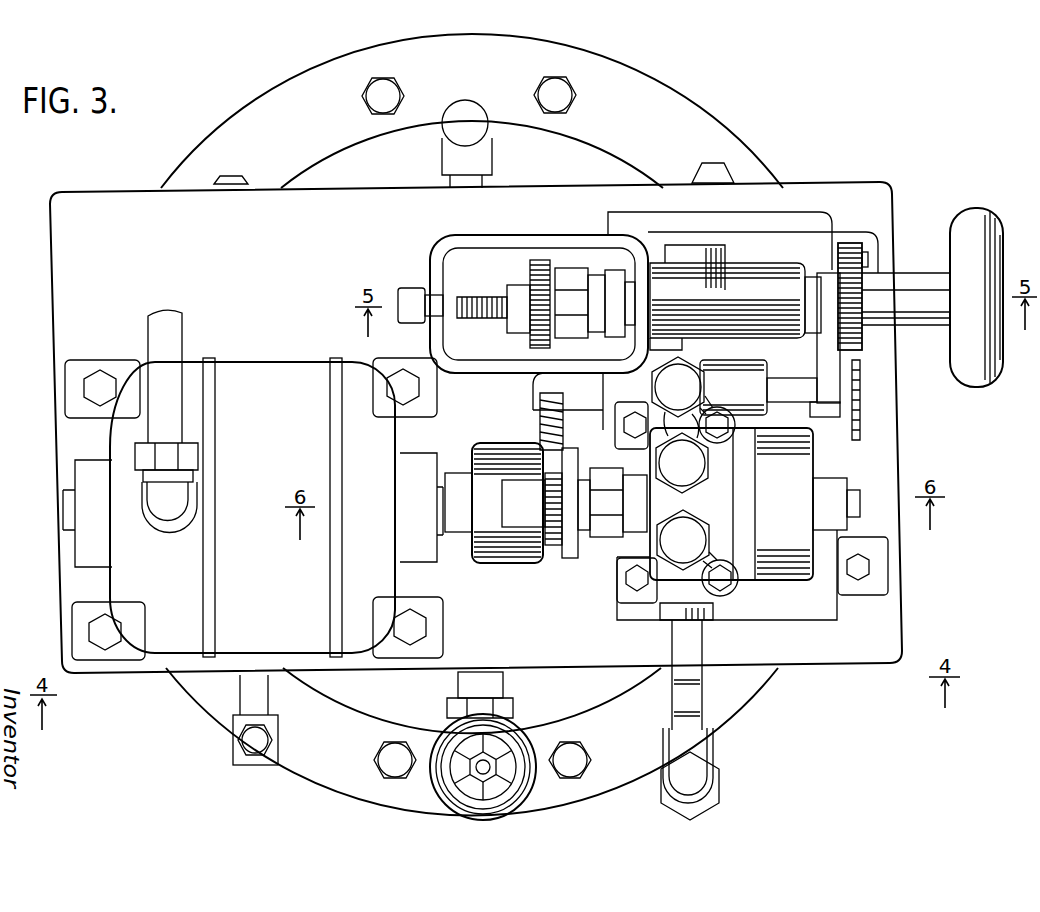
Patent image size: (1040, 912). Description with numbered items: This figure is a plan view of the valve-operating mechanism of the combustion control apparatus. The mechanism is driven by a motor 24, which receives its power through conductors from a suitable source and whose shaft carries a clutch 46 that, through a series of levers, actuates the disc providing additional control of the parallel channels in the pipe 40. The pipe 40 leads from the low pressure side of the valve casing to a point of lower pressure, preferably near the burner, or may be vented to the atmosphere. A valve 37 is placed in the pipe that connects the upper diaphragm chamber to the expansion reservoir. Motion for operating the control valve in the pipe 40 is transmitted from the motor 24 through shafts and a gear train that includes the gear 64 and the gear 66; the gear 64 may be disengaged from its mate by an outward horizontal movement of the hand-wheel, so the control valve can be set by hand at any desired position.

The motor 24 is at (283, 378).
The valve 37 is at (497, 773).
The pipe 40 is at (692, 698).
The clutch 46 is at (505, 545).
The gear 64 is at (863, 347).
The gear 66 is at (538, 260).